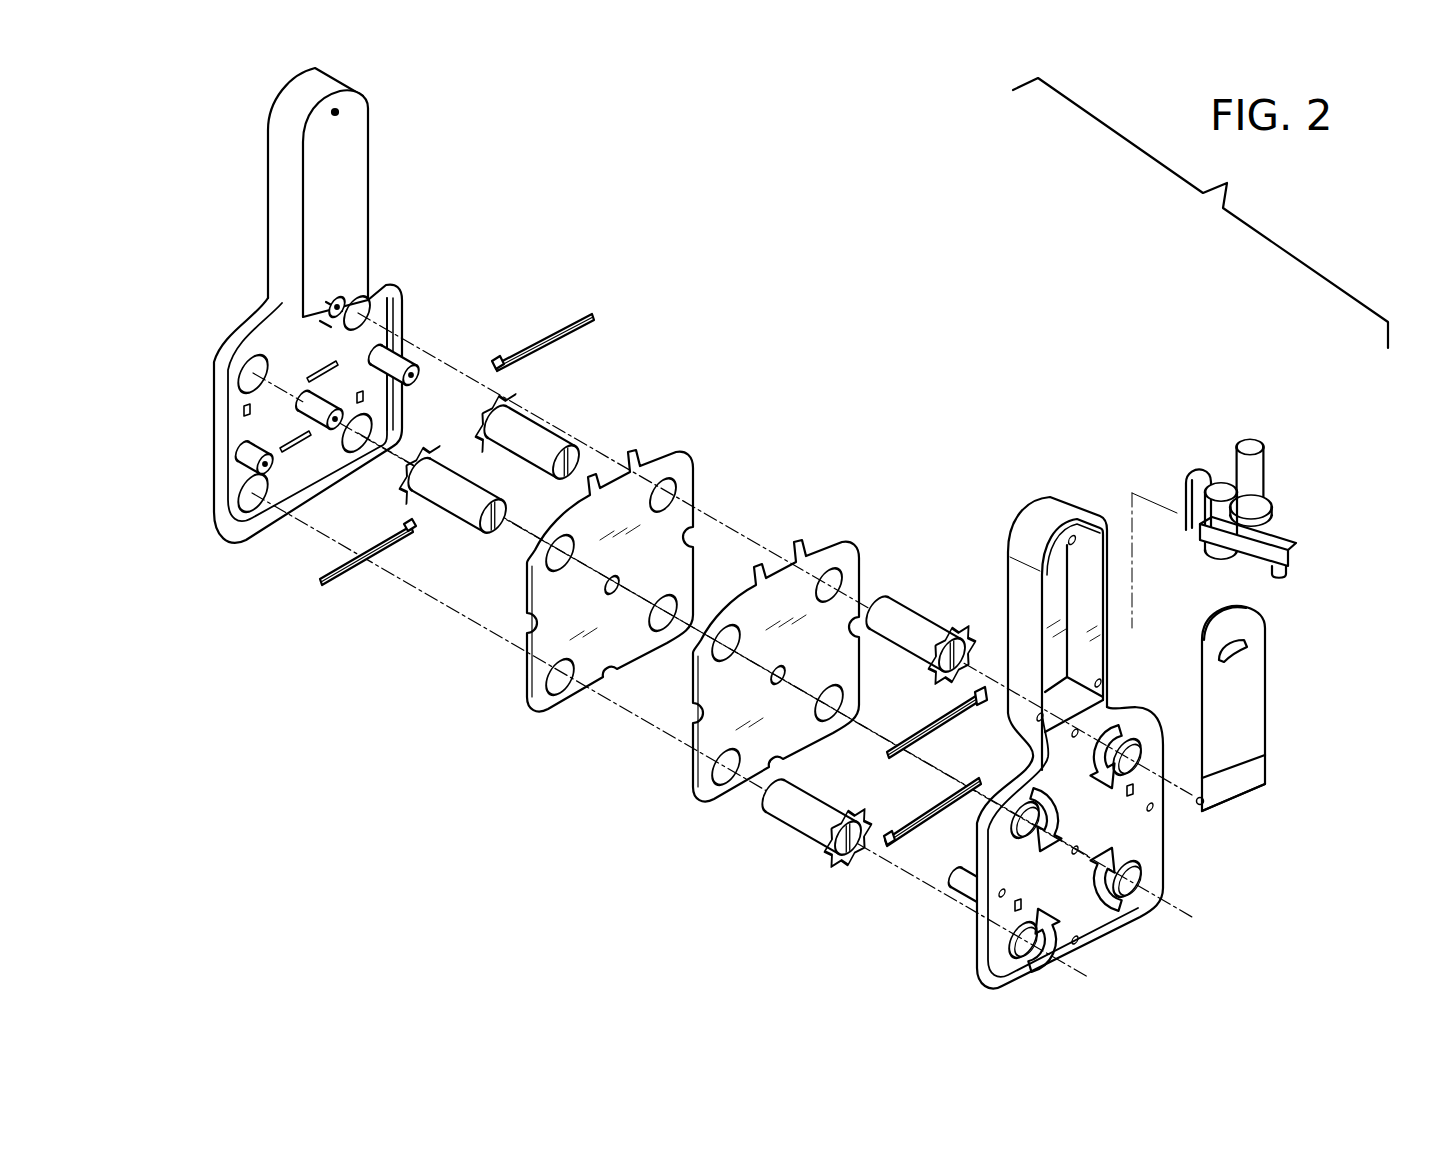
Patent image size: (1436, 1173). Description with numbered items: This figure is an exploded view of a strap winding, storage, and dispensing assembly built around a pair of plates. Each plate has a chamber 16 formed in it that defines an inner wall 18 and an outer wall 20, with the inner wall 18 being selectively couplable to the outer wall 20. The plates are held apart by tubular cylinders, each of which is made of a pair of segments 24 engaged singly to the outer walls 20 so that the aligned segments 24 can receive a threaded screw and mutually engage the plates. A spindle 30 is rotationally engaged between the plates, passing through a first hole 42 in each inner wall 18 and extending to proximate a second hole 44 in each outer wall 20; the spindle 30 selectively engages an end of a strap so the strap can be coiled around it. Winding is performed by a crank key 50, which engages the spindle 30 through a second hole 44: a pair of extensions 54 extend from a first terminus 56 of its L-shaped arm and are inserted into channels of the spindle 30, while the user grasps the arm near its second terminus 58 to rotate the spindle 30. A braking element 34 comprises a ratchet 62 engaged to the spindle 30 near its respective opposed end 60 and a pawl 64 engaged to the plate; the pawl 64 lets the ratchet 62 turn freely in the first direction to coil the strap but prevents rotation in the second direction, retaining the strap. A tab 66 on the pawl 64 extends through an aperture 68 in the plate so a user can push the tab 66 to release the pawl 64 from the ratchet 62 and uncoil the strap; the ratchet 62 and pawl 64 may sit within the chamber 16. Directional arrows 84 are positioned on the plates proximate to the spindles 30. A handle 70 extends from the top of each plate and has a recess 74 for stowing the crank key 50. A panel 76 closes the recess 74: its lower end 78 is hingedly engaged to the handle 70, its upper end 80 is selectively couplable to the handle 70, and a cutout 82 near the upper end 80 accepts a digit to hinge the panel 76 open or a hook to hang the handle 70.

The chamber 16 is at (284, 486).
The inner wall 18 is at (700, 463).
The outer wall 20 is at (1130, 835).
The segment 24 is at (240, 462).
The spindle 30 is at (800, 850).
The braking element 34 is at (493, 402).
The first hole 42 is at (562, 580).
The second hole 44 is at (1117, 743).
The crank key 50 is at (1294, 519).
The extension 54 is at (1256, 433).
The first terminus 56 is at (1276, 499).
The second terminus 58 is at (1180, 533).
The opposed end 60 is at (515, 424).
The ratchet 62 is at (528, 392).
The pawl 64 is at (393, 560).
The tab 66 is at (989, 720).
The aperture 68 is at (245, 406).
The handle 70 is at (1040, 495).
The recess 74 is at (1088, 566).
The panel 76 is at (1293, 692).
The lower end 78 is at (1256, 797).
The upper end 80 is at (1249, 607).
The cutout 82 is at (1252, 649).
The directional arrow 84 is at (1127, 917).